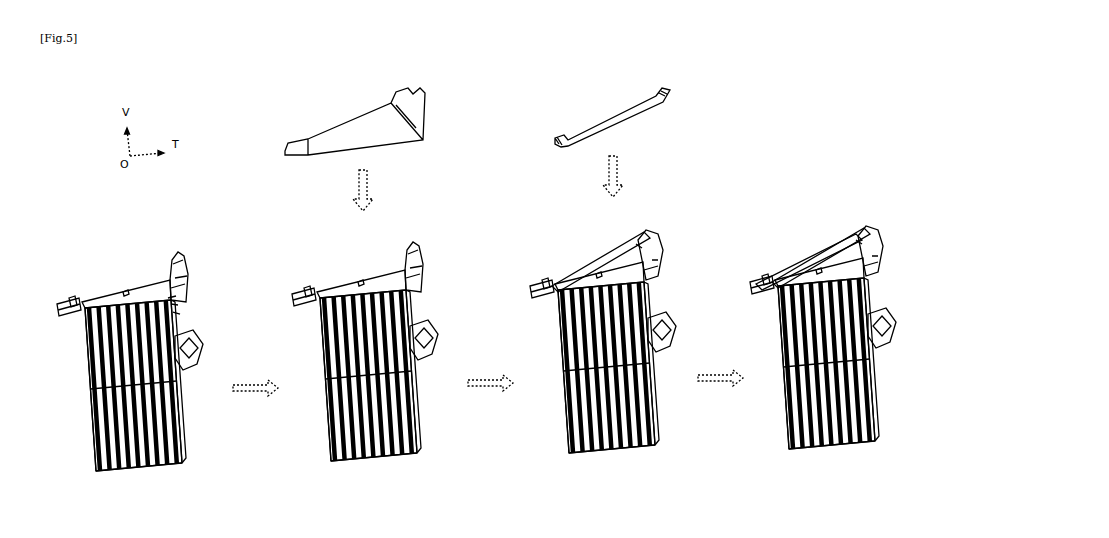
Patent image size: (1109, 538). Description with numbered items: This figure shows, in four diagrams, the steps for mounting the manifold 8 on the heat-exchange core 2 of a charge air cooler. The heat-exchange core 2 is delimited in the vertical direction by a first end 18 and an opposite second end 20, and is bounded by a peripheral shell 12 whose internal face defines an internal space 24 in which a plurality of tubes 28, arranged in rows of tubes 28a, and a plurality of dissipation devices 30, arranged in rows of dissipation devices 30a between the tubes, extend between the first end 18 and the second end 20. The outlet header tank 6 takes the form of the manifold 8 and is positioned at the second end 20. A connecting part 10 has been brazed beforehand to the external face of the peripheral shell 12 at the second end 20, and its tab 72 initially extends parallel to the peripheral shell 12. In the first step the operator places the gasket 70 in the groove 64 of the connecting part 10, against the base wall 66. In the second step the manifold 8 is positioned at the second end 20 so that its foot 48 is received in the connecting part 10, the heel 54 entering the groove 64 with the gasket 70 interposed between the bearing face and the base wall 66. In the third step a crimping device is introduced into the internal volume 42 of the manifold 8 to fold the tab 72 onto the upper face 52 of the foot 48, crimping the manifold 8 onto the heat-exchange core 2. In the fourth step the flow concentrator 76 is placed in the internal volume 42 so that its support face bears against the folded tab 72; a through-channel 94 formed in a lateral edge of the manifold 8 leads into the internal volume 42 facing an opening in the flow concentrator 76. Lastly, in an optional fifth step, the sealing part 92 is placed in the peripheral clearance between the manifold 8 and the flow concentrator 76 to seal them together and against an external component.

The heat-exchange core 2 is at (82, 441).
The outlet header tank 6 is at (185, 268).
The manifold 8 is at (524, 275).
The connecting part 10 is at (172, 300).
The peripheral shell 12 is at (180, 328).
The first end 18 is at (125, 465).
The second end 20 is at (117, 287).
The internal space 24 is at (78, 350).
The plurality of tubes 28 is at (172, 438).
The rows of tubes 28a is at (480, 374).
The plurality of dissipation devices 30 is at (170, 400).
The rows of dissipation devices 30a is at (518, 371).
The internal volume 42 is at (122, 296).
The foot 48 is at (170, 294).
The upper face 52 is at (68, 292).
The heel 54 is at (168, 299).
The groove 64 is at (170, 308).
The base wall 66 is at (62, 315).
The gasket 70 is at (60, 302).
The tab 72 is at (170, 250).
The flow concentrator 76 is at (350, 128).
The sealing part 92 is at (600, 115).
The through-channel 94 is at (640, 235).